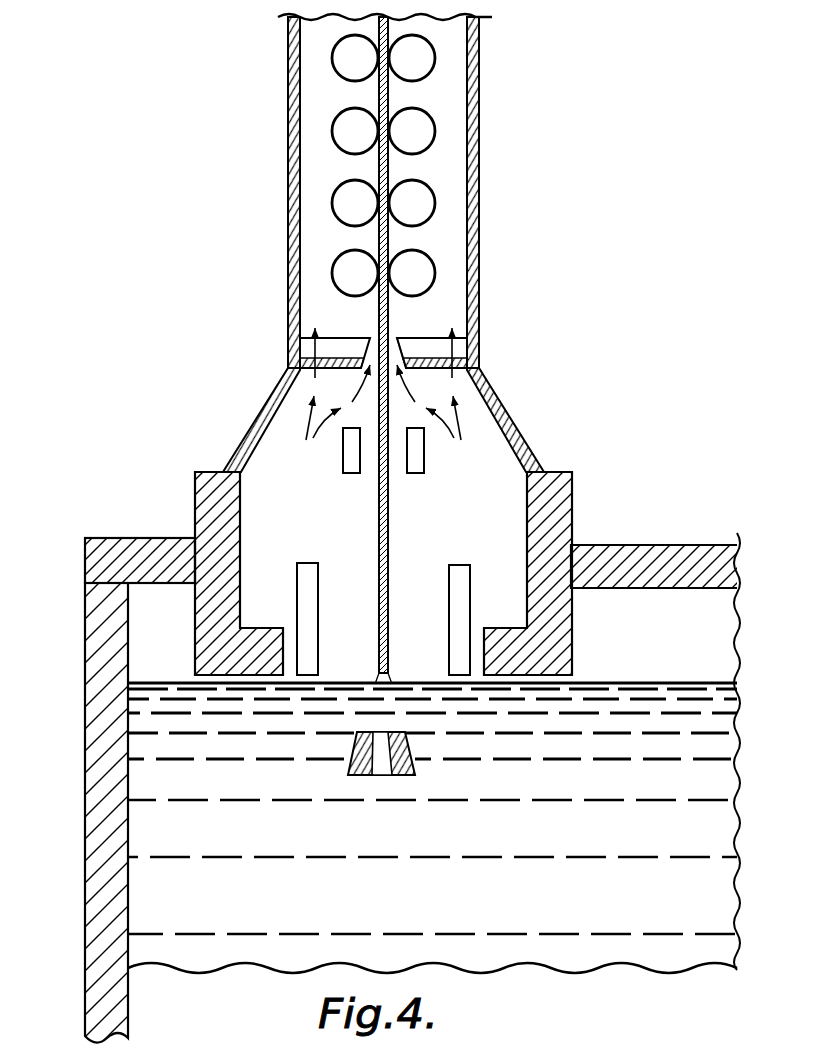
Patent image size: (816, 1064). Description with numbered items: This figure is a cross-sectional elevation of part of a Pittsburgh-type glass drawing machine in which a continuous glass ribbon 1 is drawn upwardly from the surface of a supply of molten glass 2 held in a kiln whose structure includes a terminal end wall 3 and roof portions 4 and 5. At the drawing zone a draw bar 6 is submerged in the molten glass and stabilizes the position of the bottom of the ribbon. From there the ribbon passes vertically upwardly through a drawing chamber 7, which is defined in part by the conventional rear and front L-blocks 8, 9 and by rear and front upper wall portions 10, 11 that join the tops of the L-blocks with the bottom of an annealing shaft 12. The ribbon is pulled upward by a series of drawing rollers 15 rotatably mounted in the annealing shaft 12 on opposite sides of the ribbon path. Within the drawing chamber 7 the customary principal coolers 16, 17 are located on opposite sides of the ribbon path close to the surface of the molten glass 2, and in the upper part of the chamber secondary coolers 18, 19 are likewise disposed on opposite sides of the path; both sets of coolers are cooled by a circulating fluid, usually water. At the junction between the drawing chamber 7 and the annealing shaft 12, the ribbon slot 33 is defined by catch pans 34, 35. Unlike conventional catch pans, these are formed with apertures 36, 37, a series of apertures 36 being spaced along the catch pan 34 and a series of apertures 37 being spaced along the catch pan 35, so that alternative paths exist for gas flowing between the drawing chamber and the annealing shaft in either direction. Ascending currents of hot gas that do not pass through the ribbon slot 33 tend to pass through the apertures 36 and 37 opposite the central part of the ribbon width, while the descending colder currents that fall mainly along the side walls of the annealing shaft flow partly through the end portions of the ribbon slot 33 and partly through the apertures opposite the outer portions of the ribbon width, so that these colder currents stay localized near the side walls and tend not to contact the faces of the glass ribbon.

The central feed tube 1 is at (388, 537).
The supply of molten glass 2 is at (372, 914).
The terminal end wall 3 is at (112, 788).
The roof portion 4 is at (143, 560).
The roof portion 5 is at (704, 568).
The draw bar 6 is at (353, 775).
The drawing chamber 7 is at (494, 504).
The rear L-block 8 is at (227, 512).
The front L-block 9 is at (540, 522).
The rear upper wall portion 10 is at (247, 437).
The front upper wall portion 11 is at (530, 443).
The annealing shaft 12 is at (497, 212).
The drawing rollers 15 is at (350, 128).
The principal cooler 16 is at (313, 590).
The principal cooler 17 is at (455, 590).
The secondary cooler 18 is at (352, 455).
The secondary cooler 19 is at (415, 455).
The ribbon slot 33 is at (397, 336).
The catch pan 34 is at (348, 352).
The catch pan 35 is at (418, 352).
The apertures 36 is at (287, 372).
The apertures 37 is at (480, 372).